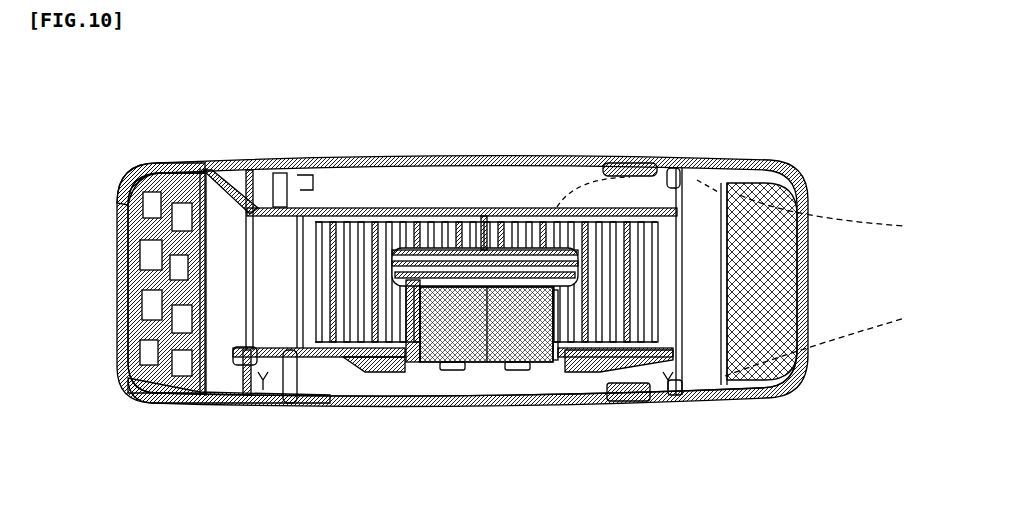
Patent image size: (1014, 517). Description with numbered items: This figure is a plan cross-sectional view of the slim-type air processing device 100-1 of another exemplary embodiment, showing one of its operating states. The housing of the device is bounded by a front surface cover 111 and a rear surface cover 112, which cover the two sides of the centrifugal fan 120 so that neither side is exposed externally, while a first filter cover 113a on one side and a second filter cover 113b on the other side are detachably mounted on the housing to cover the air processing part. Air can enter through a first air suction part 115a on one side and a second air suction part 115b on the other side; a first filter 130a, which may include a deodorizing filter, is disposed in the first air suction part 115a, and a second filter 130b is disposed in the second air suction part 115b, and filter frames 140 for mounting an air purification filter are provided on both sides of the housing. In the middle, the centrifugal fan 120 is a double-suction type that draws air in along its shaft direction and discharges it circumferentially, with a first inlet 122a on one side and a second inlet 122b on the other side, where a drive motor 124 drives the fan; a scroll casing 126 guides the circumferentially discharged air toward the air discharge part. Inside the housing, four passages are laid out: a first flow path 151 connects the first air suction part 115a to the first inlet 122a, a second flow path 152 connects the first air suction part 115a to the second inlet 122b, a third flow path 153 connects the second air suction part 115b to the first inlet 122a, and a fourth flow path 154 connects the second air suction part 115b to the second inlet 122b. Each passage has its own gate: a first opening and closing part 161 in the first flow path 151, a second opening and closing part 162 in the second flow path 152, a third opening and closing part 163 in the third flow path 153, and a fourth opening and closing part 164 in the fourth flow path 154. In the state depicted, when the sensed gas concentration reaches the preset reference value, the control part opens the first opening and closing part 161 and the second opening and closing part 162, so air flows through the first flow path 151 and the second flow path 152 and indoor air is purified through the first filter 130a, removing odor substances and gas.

The slim-type air processing device 100-1 is at (492, 74).
The front surface cover 111 is at (458, 158).
The rear surface cover 112 is at (390, 410).
The first filter cover 113a is at (808, 188).
The second filter cover 113b is at (120, 392).
The first air suction part 115a is at (808, 260).
The second air suction part 115b is at (120, 272).
The centrifugal fan 120 is at (490, 392).
The first inlet 122a is at (482, 215).
The second inlet 122b is at (567, 392).
The drive motor 124 is at (553, 392).
The scroll casing 126 is at (322, 208).
The first filter 130a is at (788, 393).
The second filter 130b is at (173, 392).
The filter frame 140 is at (194, 170).
The first flow path 151 is at (688, 168).
The second flow path 152 is at (663, 392).
The third flow path 153 is at (250, 170).
The fourth flow path 154 is at (263, 392).
The first opening and closing part 161 is at (625, 168).
The second opening and closing part 162 is at (627, 392).
The third opening and closing part 163 is at (303, 188).
The fourth opening and closing part 164 is at (300, 405).